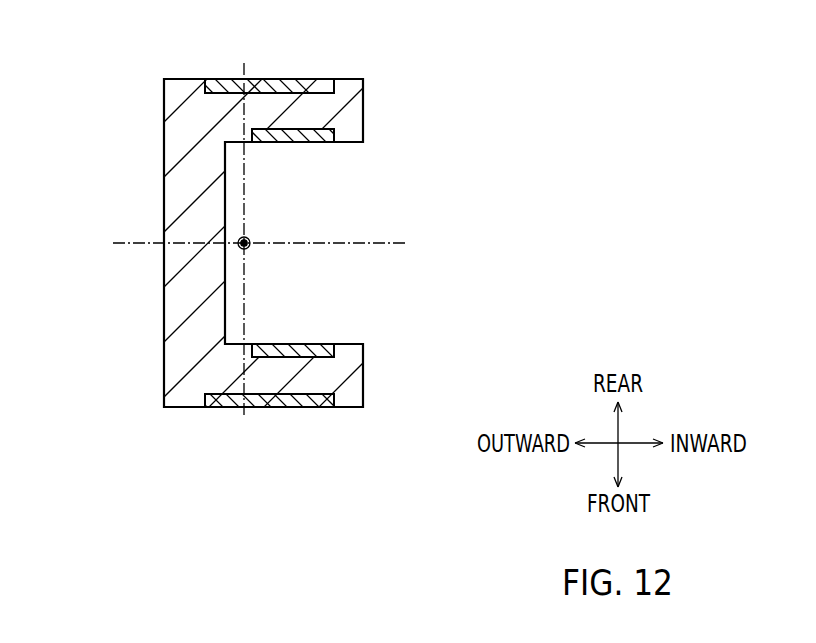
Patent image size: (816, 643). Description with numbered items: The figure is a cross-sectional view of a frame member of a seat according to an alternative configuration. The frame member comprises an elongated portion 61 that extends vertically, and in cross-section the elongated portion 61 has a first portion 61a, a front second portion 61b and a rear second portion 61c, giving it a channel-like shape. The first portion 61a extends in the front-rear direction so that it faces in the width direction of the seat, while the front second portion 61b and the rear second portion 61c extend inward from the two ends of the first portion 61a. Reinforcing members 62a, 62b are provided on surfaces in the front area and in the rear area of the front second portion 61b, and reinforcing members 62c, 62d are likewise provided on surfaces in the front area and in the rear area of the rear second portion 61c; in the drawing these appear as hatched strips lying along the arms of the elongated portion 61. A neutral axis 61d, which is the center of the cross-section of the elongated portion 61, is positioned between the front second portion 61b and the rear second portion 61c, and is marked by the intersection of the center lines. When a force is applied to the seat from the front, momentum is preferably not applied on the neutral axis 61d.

The elongated portion 61 is at (100, 58).
The first portion 61a is at (175, 203).
The front second portion 61b is at (357, 375).
The rear second portion 61c is at (357, 110).
The neutral axis 61d is at (252, 241).
The reinforcing member 62a is at (270, 405).
The reinforcing member 62b is at (285, 347).
The reinforcing member 62c is at (288, 143).
The reinforcing member 62d is at (266, 82).